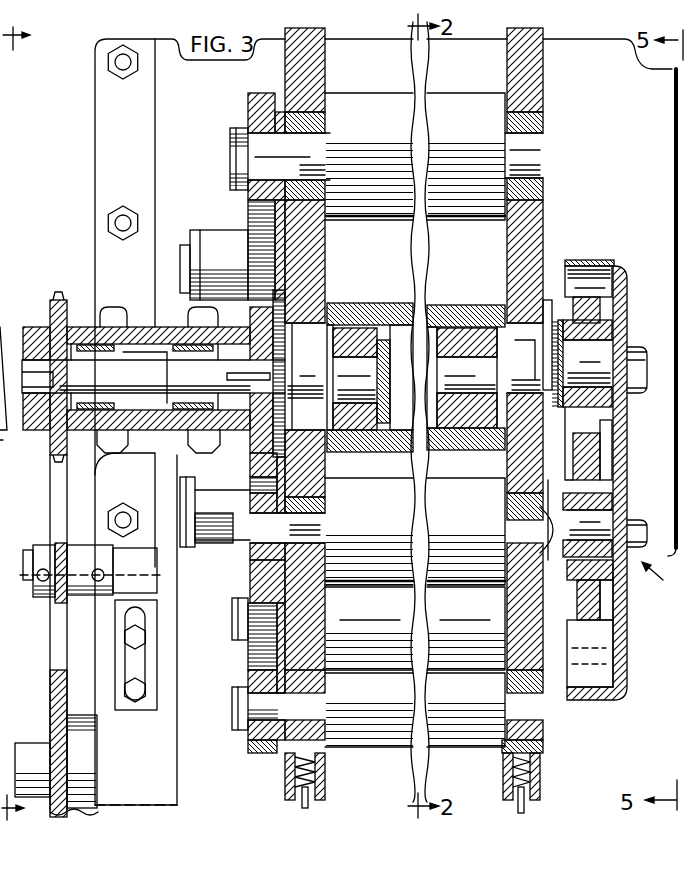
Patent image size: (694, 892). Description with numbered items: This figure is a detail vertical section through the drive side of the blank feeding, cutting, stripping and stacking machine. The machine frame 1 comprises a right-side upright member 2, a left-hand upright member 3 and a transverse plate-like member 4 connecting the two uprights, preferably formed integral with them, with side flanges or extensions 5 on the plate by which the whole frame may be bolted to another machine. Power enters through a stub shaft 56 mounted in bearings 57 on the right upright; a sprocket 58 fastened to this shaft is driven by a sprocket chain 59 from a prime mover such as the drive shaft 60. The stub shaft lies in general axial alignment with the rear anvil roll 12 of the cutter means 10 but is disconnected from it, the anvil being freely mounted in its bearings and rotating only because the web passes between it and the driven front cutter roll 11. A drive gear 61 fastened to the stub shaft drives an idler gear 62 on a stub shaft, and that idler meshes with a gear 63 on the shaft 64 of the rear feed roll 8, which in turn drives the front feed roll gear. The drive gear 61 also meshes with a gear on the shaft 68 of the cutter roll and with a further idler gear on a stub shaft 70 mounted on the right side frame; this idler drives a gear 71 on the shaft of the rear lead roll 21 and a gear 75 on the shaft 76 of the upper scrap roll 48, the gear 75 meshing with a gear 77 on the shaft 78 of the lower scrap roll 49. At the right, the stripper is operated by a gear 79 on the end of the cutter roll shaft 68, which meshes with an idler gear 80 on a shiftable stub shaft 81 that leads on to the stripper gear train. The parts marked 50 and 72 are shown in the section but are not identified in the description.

The machine frame 1 is at (658, 578).
The right-side upright member 2 is at (285, 67).
The left-hand upright member 3 is at (545, 217).
The transverse plate-like member 4 is at (105, 133).
The side flanges or extensions 5 is at (107, 193).
The rear feed roll 8 is at (448, 93).
The cutter means 10 is at (0, 313).
The front cutter roll 11 is at (11, 354).
The rear anvil roll 12 is at (470, 306).
The rear lead roll 21 is at (347, 488).
The upper scrap roll 48 is at (450, 655).
The lower scrap roll 49 is at (453, 747).
The hub 50 is at (597, 600).
The stub shaft 56 is at (98, 370).
The bearings 57 is at (157, 330).
The sprocket 58 is at (57, 300).
The sprocket chain 59 is at (48, 645).
The drive shaft 60 is at (42, 750).
The drive gear 61 is at (276, 343).
The idler gear 62 is at (253, 247).
The gear 63 is at (248, 107).
The shaft 64 is at (535, 148).
The cutter roll shaft 68 is at (595, 362).
The stub shaft 70 is at (250, 472).
The gear 71 is at (248, 570).
The shaft 72 is at (310, 527).
The gear 75 is at (248, 652).
The shaft 76 is at (232, 618).
The gear 77 is at (262, 757).
The shaft 78 is at (250, 737).
The gear 79 is at (592, 308).
The idler gear 80 is at (593, 462).
The shiftable stub shaft 81 is at (597, 523).